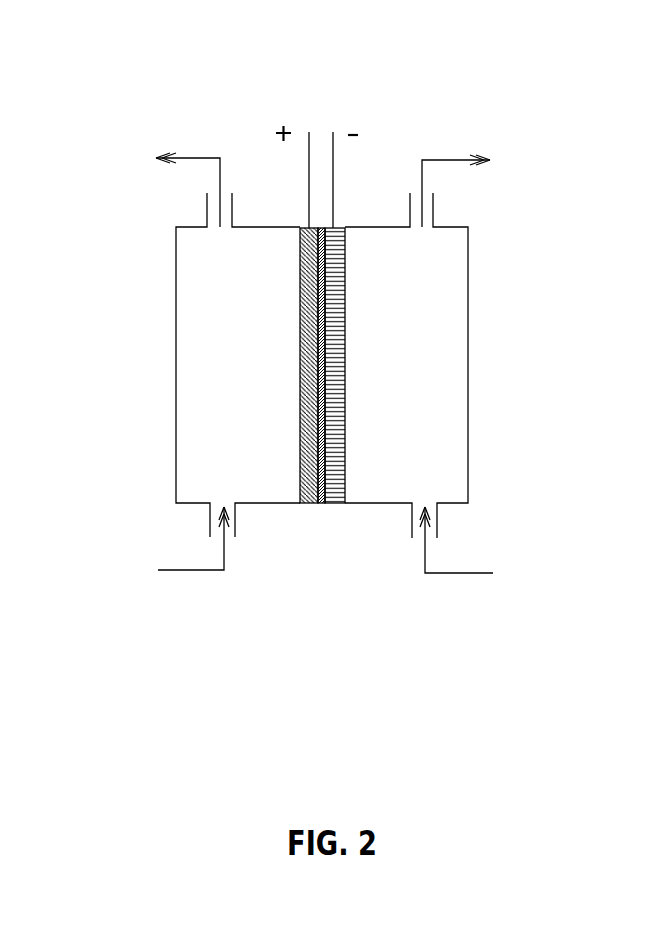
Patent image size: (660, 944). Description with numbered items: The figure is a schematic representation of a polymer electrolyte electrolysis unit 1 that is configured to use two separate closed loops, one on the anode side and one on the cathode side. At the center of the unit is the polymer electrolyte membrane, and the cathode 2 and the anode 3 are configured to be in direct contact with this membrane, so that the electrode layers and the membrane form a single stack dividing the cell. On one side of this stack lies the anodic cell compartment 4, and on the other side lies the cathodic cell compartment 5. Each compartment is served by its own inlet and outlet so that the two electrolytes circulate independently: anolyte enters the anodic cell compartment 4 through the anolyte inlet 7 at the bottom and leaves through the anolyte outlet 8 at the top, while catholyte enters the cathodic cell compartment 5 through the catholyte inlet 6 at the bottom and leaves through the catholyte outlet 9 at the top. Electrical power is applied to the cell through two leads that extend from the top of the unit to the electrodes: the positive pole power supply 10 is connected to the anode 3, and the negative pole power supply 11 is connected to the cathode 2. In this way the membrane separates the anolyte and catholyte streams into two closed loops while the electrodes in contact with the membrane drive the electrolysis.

The polymer electrolyte electrolysis unit 1 is at (321, 358).
The cathode 2 is at (333, 280).
The anode 3 is at (308, 385).
The anodic cell compartment 4 is at (177, 303).
The cathodic cell compartment 5 is at (468, 438).
The catholyte inlet 6 is at (450, 572).
The anolyte inlet 7 is at (179, 571).
The anolyte outlet 8 is at (200, 158).
The catholyte outlet 9 is at (448, 161).
The positive pole power supply 10 is at (309, 190).
The negative pole power supply 11 is at (333, 190).